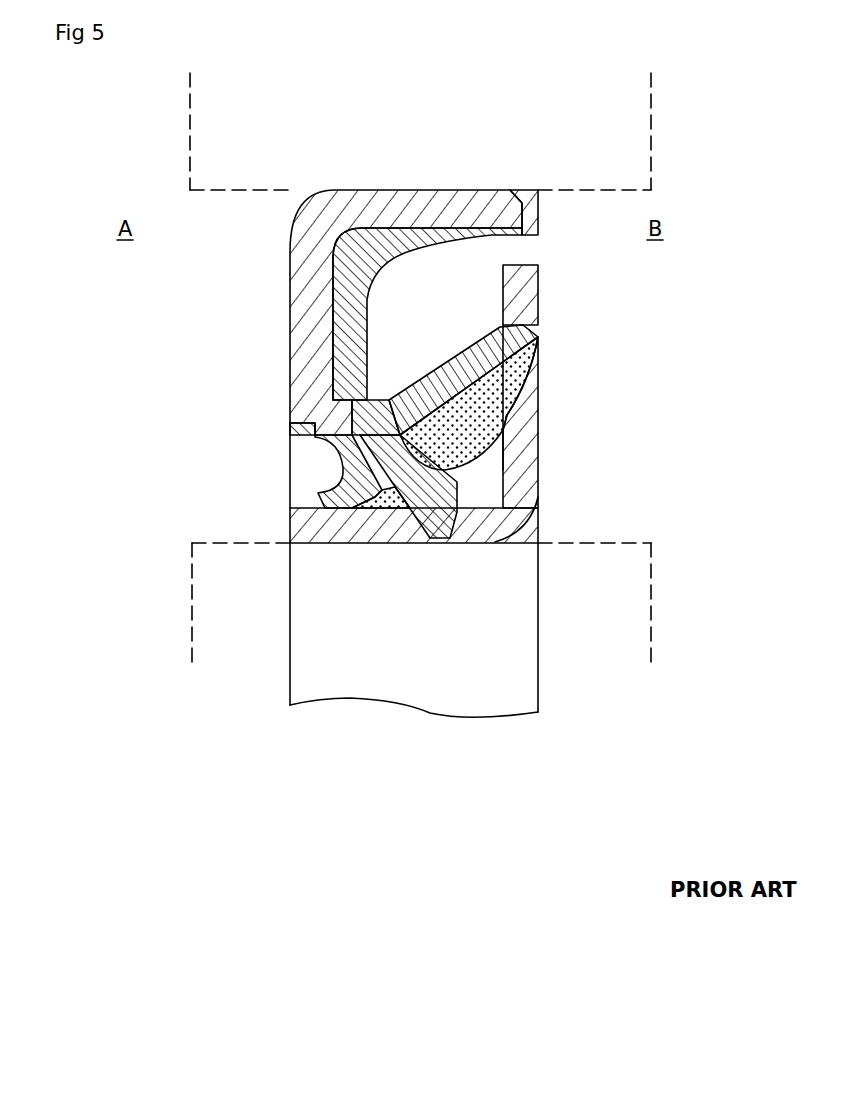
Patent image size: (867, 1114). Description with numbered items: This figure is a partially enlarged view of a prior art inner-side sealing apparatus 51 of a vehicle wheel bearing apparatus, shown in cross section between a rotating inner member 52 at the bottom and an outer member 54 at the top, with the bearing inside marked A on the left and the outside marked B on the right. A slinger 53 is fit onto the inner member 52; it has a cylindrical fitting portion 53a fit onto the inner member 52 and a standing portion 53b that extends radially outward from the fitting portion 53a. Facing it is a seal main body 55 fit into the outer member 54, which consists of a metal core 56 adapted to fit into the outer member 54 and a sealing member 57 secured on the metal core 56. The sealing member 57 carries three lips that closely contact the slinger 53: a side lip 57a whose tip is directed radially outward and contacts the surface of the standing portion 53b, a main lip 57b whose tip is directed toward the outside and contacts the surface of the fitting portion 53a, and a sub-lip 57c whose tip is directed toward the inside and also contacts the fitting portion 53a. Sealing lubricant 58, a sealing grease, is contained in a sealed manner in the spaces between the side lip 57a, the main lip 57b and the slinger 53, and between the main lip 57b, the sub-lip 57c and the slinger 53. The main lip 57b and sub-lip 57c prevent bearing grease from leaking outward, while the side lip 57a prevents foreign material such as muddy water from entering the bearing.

The inner-side sealing apparatus 51 is at (606, 316).
The inner member 52 is at (200, 638).
The slinger 53 is at (503, 625).
The cylindrical fitting portion 53a is at (415, 525).
The standing portion 53b is at (503, 462).
The outer member 54 is at (213, 134).
The seal main body 55 is at (147, 335).
The metal core 56 is at (305, 317).
The sealing member 57 is at (212, 372).
The side lip 57a is at (475, 342).
The main lip 57b is at (315, 423).
The sub-lip 57c is at (318, 493).
The sealing lubricant 58 is at (478, 407).